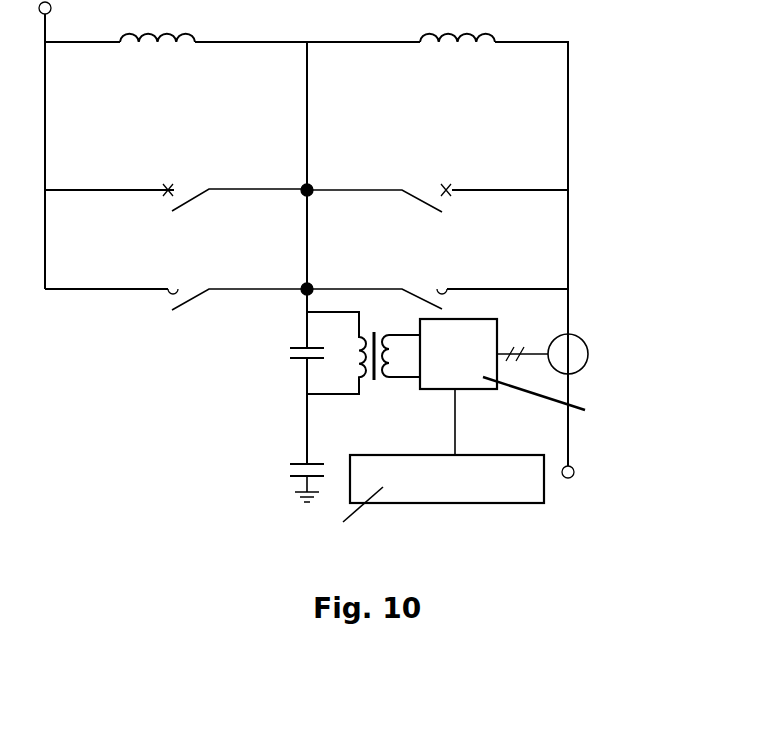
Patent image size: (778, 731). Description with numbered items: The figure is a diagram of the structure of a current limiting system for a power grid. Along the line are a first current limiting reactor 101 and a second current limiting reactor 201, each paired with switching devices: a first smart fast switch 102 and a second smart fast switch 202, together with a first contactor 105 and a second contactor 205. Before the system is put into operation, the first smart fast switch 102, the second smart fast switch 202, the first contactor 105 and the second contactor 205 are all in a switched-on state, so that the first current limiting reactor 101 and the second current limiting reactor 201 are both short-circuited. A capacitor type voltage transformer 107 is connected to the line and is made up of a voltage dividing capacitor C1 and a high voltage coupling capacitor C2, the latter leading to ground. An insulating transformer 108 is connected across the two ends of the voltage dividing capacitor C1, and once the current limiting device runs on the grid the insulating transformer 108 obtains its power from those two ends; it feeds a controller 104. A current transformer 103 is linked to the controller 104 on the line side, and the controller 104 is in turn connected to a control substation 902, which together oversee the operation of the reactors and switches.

The second current limiting reactor 201 is at (157, 23).
The first current limiting reactor 101 is at (457, 23).
The second smart fast switch 202 is at (176, 183).
The first smart fast switch 102 is at (437, 184).
The second contactor 205 is at (176, 282).
The first contactor 105 is at (437, 285).
The voltage dividing capacitor C1 is at (322, 355).
The capacitor type voltage transformer 107 is at (282, 411).
The high voltage coupling capacitor C2 is at (292, 483).
The insulating transformer 108 is at (364, 337).
The controller 104 is at (472, 338).
The current transformer 103 is at (542, 351).
The control substation 902 is at (490, 487).